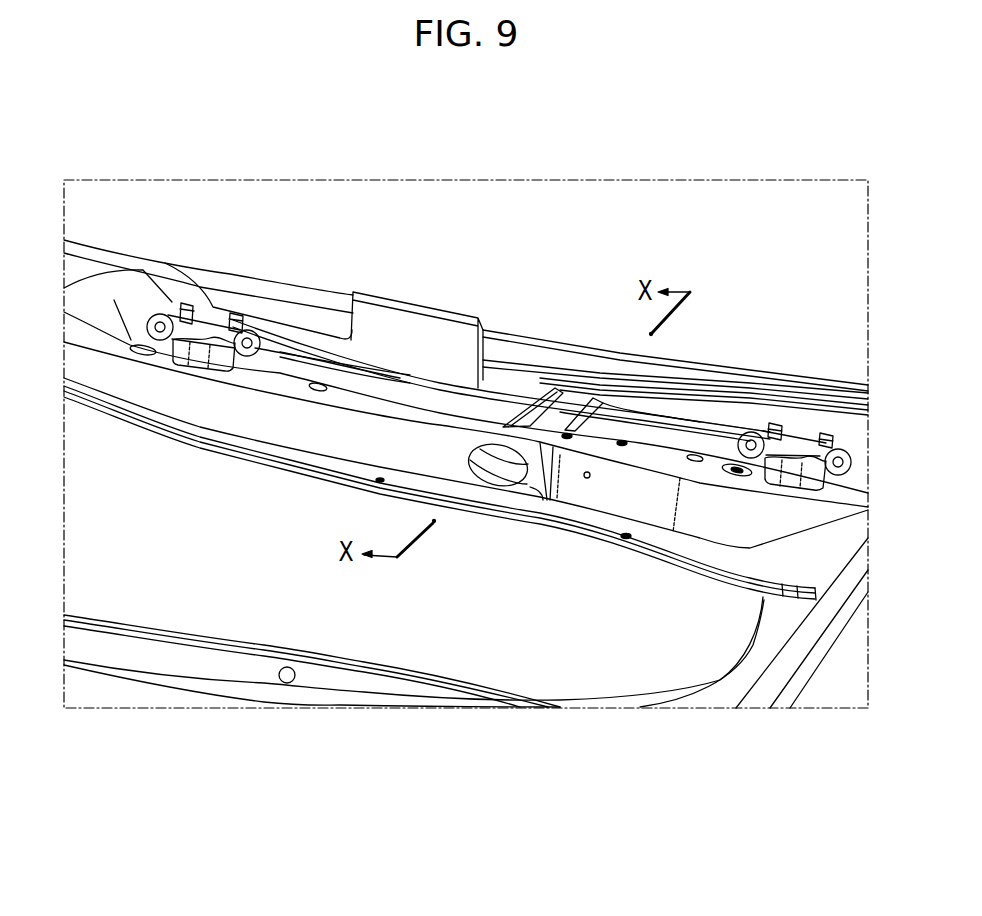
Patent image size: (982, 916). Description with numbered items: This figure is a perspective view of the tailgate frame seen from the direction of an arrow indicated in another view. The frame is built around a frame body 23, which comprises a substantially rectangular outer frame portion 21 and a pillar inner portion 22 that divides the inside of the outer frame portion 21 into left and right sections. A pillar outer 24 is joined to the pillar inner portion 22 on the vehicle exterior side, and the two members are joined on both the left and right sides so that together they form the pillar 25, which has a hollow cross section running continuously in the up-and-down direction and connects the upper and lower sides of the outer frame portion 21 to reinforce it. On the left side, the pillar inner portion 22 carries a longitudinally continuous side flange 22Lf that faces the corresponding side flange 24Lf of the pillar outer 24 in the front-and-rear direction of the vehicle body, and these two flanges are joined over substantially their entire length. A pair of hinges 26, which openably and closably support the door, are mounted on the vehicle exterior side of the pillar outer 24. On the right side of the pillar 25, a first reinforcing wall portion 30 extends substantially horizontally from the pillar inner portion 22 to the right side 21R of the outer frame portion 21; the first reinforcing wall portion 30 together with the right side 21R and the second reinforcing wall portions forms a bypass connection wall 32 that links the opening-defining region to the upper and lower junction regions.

The outer frame portion 21 is at (805, 635).
The right side of the outer frame portion 21R is at (710, 424).
The pillar inner portion 22 is at (768, 600).
The side flange 22Lf is at (571, 540).
The frame body 23 is at (798, 698).
The pillar outer 24 is at (375, 385).
The side flange 24Lf is at (350, 468).
The pillar 25 is at (455, 388).
The hinges 26 is at (217, 318).
The first reinforcing wall portion 30 is at (570, 410).
The bypass connection wall 32 is at (509, 340).